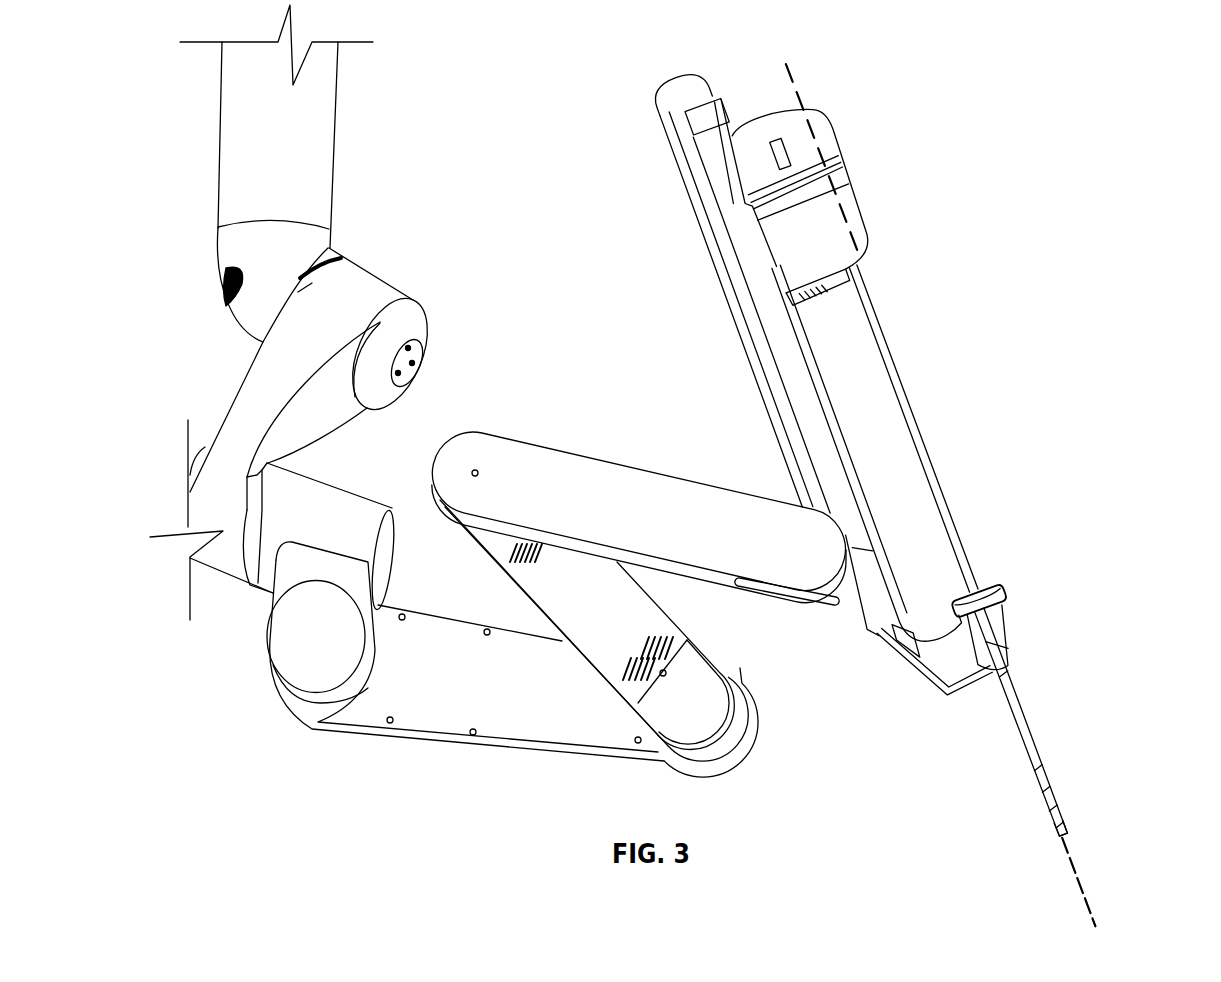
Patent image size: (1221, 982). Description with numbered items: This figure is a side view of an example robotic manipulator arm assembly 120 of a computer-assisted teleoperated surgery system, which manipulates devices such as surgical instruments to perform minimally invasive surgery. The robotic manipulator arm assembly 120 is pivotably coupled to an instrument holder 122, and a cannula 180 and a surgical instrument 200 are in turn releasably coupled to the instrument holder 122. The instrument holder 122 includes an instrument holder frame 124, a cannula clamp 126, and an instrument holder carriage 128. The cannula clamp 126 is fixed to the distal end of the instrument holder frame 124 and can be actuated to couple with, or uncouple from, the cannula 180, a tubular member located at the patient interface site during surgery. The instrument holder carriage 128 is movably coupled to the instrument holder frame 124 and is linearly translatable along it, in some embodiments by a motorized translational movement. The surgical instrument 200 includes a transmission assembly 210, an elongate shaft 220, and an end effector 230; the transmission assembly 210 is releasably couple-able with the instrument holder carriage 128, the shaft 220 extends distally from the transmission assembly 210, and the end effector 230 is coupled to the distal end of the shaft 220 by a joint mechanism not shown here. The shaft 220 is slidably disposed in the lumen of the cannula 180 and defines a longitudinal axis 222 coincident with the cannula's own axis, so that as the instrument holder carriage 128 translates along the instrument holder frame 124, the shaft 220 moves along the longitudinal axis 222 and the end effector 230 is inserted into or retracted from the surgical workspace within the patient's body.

The robotic manipulator arm assembly 120 is at (443, 165).
The instrument holder 122 is at (734, 424).
The instrument holder frame 124 is at (745, 360).
The cannula clamp 126 is at (982, 678).
The instrument holder carriage 128 is at (853, 203).
The cannula 180 is at (1018, 693).
The surgical instrument 200 is at (892, 491).
The transmission assembly 210 is at (766, 111).
The elongate shaft 220 is at (908, 407).
The longitudinal axis 222 is at (830, 116).
The end effector 230 is at (1040, 843).